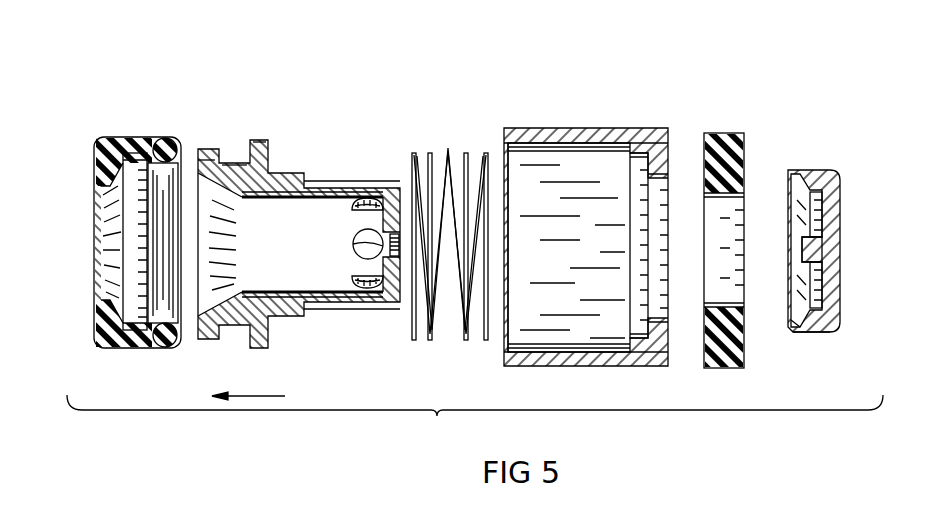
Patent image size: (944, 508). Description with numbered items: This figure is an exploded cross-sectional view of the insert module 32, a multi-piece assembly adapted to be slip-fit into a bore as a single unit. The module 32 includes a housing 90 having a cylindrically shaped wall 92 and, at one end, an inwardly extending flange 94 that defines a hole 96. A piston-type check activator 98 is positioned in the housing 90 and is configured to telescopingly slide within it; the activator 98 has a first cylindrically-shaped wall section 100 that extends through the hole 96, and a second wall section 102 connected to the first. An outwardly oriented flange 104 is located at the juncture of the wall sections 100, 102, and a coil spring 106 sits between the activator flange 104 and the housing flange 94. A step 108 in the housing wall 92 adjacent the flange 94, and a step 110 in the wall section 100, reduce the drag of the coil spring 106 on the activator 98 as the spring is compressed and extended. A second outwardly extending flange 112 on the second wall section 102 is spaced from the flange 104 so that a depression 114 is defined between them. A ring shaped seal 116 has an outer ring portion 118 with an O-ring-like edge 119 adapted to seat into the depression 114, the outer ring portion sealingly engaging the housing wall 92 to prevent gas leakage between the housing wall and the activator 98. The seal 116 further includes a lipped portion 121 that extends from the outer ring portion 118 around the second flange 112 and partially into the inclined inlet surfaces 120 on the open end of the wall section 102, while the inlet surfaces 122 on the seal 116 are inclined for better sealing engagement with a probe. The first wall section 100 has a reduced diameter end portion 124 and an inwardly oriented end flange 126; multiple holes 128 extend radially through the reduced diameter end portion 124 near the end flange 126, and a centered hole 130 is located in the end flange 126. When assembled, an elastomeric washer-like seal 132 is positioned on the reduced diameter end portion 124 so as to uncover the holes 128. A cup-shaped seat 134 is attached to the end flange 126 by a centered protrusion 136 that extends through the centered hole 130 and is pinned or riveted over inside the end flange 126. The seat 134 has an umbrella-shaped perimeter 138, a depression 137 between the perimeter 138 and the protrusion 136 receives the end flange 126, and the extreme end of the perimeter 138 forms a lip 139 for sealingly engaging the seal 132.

The module 32 is at (475, 416).
The housing 90 is at (567, 117).
The housing wall 92 is at (519, 129).
The inwardly extending flange 94 is at (660, 158).
The hole 96 is at (657, 240).
The check activator 98 is at (397, 37).
The first wall section 100 is at (392, 76).
The second wall section 102 is at (277, 76).
The outwardly oriented flange 104 is at (268, 160).
The coil spring 106 is at (433, 126).
The step 108 is at (645, 156).
The step 110 is at (300, 178).
The second outwardly extending flange 112 is at (208, 152).
The depression 114 is at (231, 150).
The ring shaped seal 116 is at (123, 114).
The outer ring portion 118 is at (110, 139).
The O-ring-like edge 119 is at (162, 140).
The inclined inlet surfaces 120 is at (296, 244).
The lipped portion 121 is at (104, 178).
The inlet surfaces 122 is at (108, 238).
The reduced diameter end portion 124 is at (331, 303).
The inwardly oriented end flange 126 is at (393, 283).
The holes 128 is at (350, 240).
The centered hole 130 is at (360, 247).
The washer-like seal 132 is at (731, 130).
The cup-shaped seat 134 is at (812, 154).
The centered protrusion 136 is at (800, 242).
The depression 137 is at (818, 290).
The umbrella-shaped perimeter 138 is at (826, 331).
The lip 139 is at (790, 328).